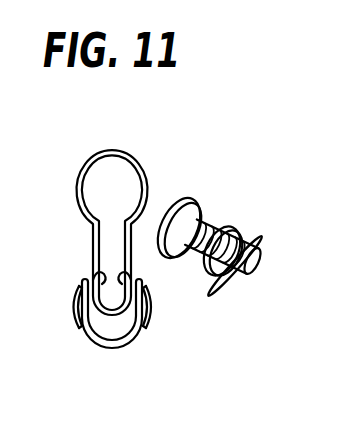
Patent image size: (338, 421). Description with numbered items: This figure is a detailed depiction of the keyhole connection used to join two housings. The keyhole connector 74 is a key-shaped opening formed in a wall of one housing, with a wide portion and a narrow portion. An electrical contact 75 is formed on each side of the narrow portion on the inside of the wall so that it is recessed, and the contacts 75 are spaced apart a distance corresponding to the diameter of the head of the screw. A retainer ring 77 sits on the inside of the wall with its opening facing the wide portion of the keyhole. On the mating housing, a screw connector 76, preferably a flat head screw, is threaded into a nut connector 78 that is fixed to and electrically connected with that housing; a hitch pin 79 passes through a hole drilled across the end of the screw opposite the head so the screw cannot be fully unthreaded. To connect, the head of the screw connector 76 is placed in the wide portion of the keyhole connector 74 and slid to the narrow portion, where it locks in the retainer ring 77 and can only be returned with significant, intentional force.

The keyhole connector 74 is at (125, 152).
The electrical contact 75 is at (71, 307).
The screw connector 76 is at (190, 199).
The retainer ring 77 is at (128, 349).
The nut connector 78 is at (232, 233).
The hitch pin 79 is at (265, 242).